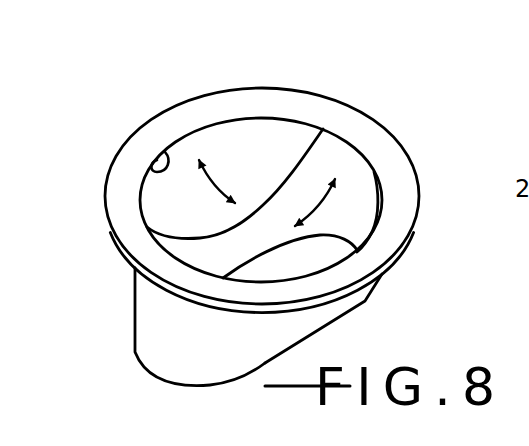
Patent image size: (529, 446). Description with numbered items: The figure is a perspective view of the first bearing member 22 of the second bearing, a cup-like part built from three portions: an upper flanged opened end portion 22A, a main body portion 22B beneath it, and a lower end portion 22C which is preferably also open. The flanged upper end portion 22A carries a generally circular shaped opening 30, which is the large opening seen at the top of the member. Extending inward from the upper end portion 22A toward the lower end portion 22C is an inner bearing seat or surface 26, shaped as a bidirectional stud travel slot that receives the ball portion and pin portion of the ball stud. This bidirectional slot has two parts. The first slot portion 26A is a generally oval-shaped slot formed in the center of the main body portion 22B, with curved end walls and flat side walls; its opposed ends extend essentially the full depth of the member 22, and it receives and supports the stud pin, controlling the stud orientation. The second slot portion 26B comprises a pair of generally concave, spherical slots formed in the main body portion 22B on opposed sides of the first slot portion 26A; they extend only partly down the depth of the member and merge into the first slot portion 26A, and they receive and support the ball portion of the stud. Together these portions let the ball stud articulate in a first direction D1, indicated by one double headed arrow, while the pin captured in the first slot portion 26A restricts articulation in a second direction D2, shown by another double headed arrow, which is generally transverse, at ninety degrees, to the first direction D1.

The first bearing member 22 is at (157, 104).
The flanged opened end portion 22A is at (393, 150).
The main body portion 22B is at (167, 347).
The lower end portion 22C is at (332, 320).
The circular shaped opening 30 is at (165, 152).
The inner bearing seat 26 is at (347, 168).
The first slot portion 26A is at (338, 152).
The second slot portion 26B is at (236, 140).
The first direction D1 is at (320, 208).
The second direction D2 is at (215, 181).